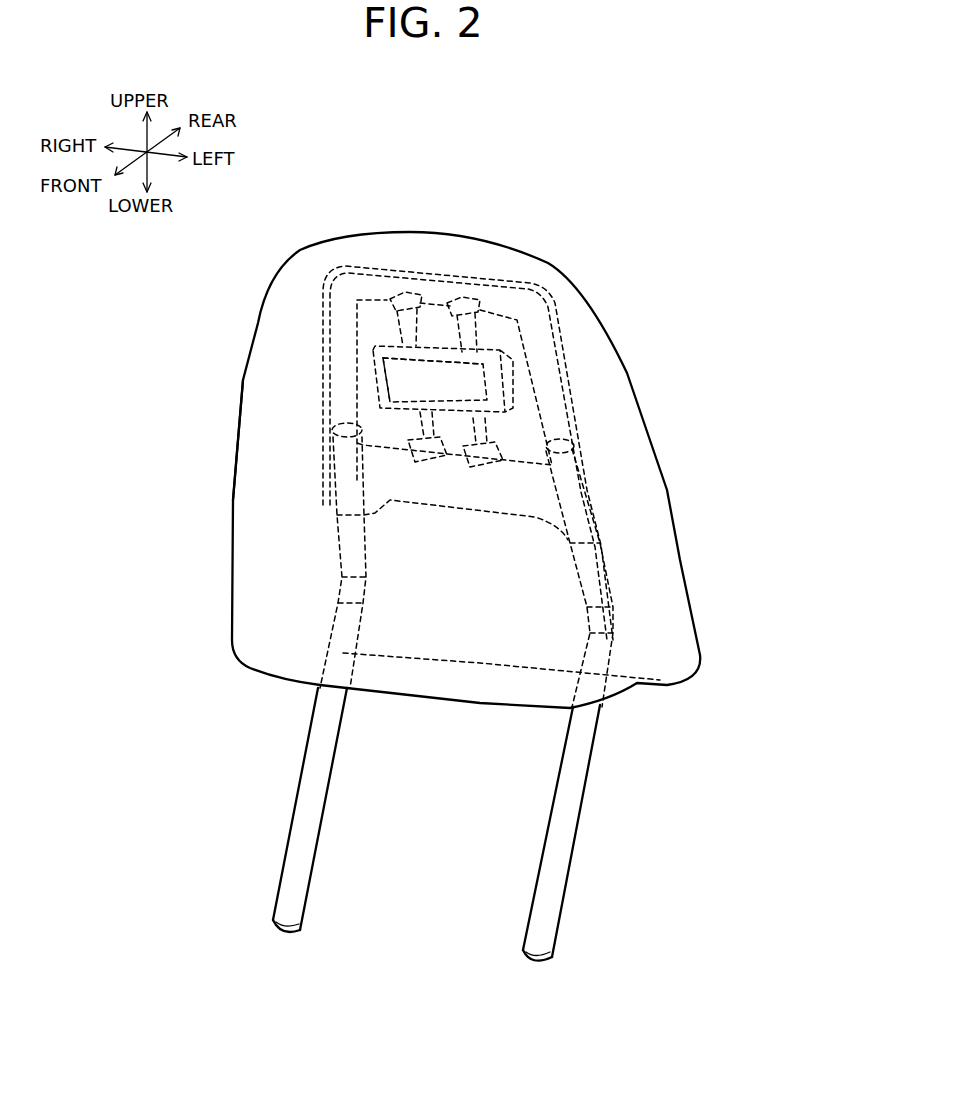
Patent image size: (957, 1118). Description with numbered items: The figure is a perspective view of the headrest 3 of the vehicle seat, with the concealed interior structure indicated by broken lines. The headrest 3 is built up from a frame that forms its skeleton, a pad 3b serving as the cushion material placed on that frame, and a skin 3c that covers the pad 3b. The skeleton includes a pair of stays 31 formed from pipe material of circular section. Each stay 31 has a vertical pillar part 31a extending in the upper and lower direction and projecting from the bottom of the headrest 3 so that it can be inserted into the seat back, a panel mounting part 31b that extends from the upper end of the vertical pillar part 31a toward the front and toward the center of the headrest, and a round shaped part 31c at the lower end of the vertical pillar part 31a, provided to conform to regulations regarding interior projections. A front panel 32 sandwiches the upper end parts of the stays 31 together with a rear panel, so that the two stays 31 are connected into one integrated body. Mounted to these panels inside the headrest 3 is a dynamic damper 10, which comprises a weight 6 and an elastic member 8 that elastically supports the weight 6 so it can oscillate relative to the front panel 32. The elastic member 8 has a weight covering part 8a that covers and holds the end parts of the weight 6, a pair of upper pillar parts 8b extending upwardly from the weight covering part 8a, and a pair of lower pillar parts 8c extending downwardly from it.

The headrest 3 is at (588, 291).
The pad 3b is at (250, 525).
The skin 3c is at (234, 562).
The weight 6 is at (472, 387).
The elastic member 8 is at (170, 333).
The weight covering part 8a is at (373, 380).
The upper pillar parts 8b is at (400, 335).
The lower pillar parts 8c is at (425, 421).
The dynamic damper 10 is at (434, 338).
The stays 31 is at (461, 740).
The vertical pillar part 31a is at (332, 788).
The panel mounting part 31b is at (338, 553).
The round shaped part 31c is at (285, 932).
The front panel 32 is at (548, 394).